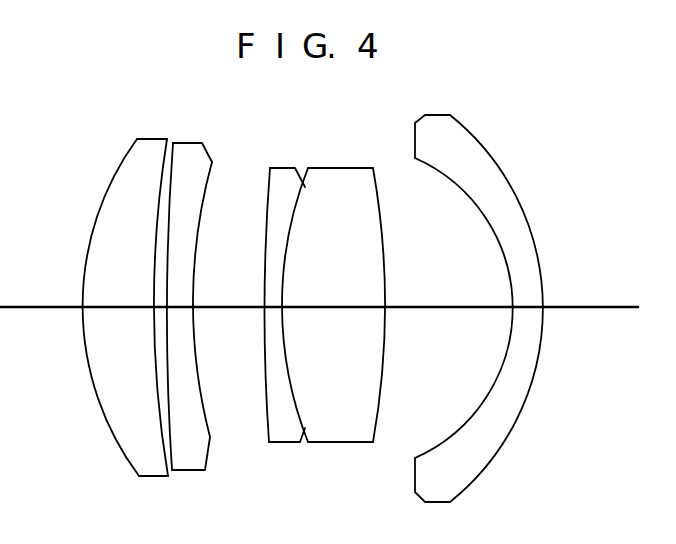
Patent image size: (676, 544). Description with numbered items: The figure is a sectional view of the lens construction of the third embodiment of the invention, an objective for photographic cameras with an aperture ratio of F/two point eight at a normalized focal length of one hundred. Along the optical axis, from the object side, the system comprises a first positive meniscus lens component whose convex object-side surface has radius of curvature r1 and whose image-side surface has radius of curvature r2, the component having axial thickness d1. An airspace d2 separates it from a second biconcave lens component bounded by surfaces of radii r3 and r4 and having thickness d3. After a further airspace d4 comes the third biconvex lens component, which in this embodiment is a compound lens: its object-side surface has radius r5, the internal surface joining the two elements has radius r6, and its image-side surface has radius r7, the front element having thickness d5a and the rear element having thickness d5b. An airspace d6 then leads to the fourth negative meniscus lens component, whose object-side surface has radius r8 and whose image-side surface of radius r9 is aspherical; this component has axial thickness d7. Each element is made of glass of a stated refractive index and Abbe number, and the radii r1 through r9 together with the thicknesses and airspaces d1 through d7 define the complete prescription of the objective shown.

The radius of curvature of first surface r1 is at (123, 454).
The radius of curvature of second surface r2 is at (164, 443).
The radius of curvature of third surface r3 is at (167, 433).
The radius of curvature of fourth surface r4 is at (210, 437).
The radius of curvature of fifth surface r5 is at (268, 430).
The radius of curvature of sixth surface r6 is at (300, 413).
The radius of curvature of seventh surface r7 is at (375, 425).
The radius of curvature of eighth surface r8 is at (439, 446).
The radius of curvature of ninth surface r9 is at (477, 480).
The thickness of first lens element d1 is at (104, 304).
The airspace between first and second lens elements d2 is at (153, 300).
The thickness of second lens element d3 is at (186, 302).
The airspace between second and third lens elements d4 is at (234, 304).
The thickness of front element of third lens component d5a is at (288, 303).
The thickness of rear element of third lens component d5b is at (347, 304).
The airspace between third and fourth lens elements d6 is at (451, 304).
The thickness of fourth lens element d7 is at (529, 303).